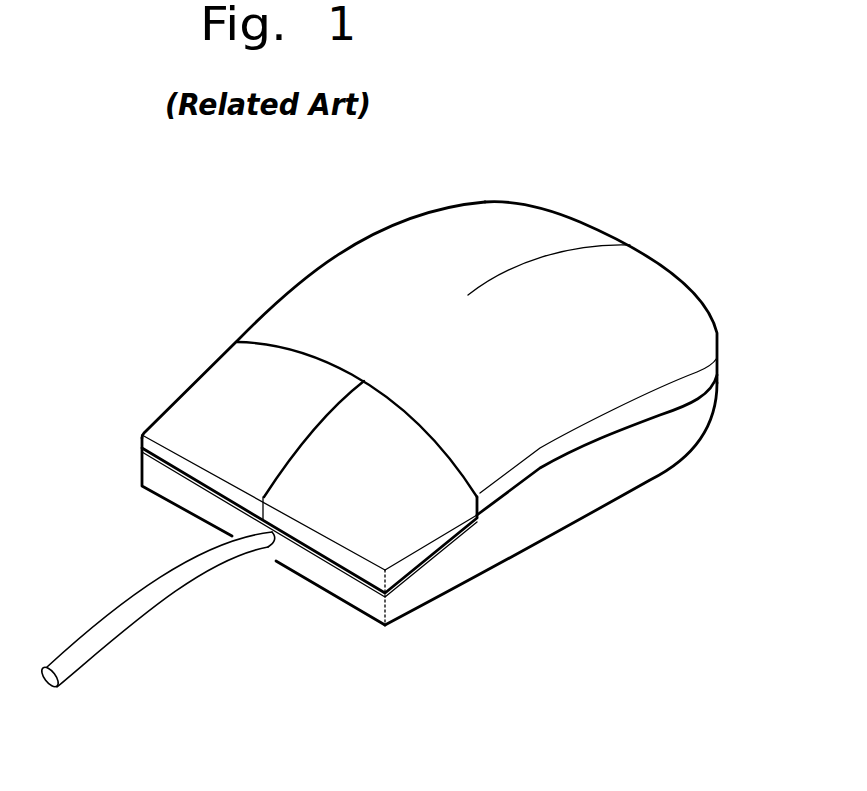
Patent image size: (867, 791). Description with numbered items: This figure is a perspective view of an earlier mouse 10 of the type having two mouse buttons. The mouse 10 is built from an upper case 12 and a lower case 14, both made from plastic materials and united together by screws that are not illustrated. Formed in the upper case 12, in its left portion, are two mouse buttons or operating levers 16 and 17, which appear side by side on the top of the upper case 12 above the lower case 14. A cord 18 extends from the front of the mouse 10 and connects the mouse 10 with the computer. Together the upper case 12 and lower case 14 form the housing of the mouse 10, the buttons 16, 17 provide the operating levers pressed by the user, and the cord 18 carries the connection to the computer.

The mouse 10 is at (192, 210).
The upper case 12 is at (638, 272).
The lower case 14 is at (587, 482).
The mouse button 16 is at (203, 392).
The mouse button 17 is at (345, 513).
The cord 18 is at (112, 633).